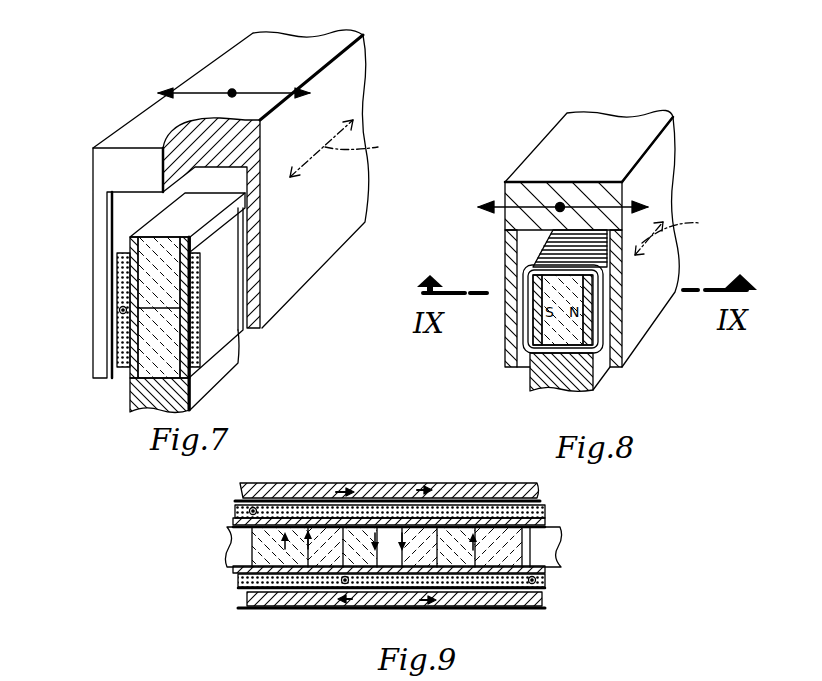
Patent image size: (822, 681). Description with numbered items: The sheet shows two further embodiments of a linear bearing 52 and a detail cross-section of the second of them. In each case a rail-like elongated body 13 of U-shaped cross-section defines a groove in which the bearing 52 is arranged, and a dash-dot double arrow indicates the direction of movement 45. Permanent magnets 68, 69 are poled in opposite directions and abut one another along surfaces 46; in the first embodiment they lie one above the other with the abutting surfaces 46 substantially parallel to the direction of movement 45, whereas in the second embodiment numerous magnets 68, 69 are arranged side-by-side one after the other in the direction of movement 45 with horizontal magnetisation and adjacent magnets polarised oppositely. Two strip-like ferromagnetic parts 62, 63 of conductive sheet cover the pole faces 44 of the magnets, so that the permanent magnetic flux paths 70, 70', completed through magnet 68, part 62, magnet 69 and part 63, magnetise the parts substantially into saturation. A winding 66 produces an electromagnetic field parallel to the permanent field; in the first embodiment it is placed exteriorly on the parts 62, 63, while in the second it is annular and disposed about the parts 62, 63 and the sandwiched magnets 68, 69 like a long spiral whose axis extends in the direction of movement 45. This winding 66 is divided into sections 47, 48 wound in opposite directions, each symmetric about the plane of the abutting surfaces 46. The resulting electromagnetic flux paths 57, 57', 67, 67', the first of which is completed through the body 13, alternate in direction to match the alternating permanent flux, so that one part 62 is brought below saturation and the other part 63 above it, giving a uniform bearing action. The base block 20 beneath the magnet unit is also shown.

In FIG. 7, the body 13 is at (320, 233).
In FIG. 8, the body 13 is at (542, 167).
In FIG. 9, the body 13 is at (508, 487).
In FIG. 7, the base block 20 is at (138, 400).
In FIG. 8, the base block 20 is at (543, 372).
In FIG. 9, the pole faces 44 is at (522, 500).
In FIG. 7, the direction of movement 45 is at (349, 148).
In FIG. 8, the direction of movement 45 is at (683, 234).
In FIG. 7, the abutting surfaces 46 is at (160, 300).
In FIG. 9, the abutting surfaces 46 is at (553, 568).
In FIG. 9, the winding section 47 is at (270, 592).
In FIG. 9, the winding section 48 is at (386, 588).
In FIG. 7, the bearing 52 is at (249, 344).
In FIG. 8, the bearing 52 is at (619, 375).
In FIG. 9, the electromagnetic flux path 57 is at (458, 625).
In FIG. 9, the electromagnetic flux path 57' is at (323, 625).
In FIG. 7, the ferromagnetic part 62 is at (128, 373).
In FIG. 8, the ferromagnetic part 62 is at (537, 335).
In FIG. 9, the ferromagnetic part 62 is at (307, 522).
In FIG. 7, the ferromagnetic part 63 is at (190, 377).
In FIG. 8, the ferromagnetic part 63 is at (590, 317).
In FIG. 9, the ferromagnetic part 63 is at (366, 573).
In FIG. 7, the winding 66 is at (120, 282).
In FIG. 8, the winding 66 is at (530, 312).
In FIG. 9, the electromagnetic flux path 67 is at (416, 458).
In FIG. 9, the electromagnetic flux path 67' is at (361, 457).
In FIG. 7, the permanent magnet 68 is at (118, 262).
In FIG. 9, the permanent magnet 68 is at (281, 505).
In FIG. 7, the permanent magnet 69 is at (120, 316).
In FIG. 9, the permanent magnet 69 is at (373, 502).
In FIG. 9, the permanent magnetic flux path 70 is at (506, 620).
In FIG. 9, the permanent magnetic flux path 70' is at (228, 552).